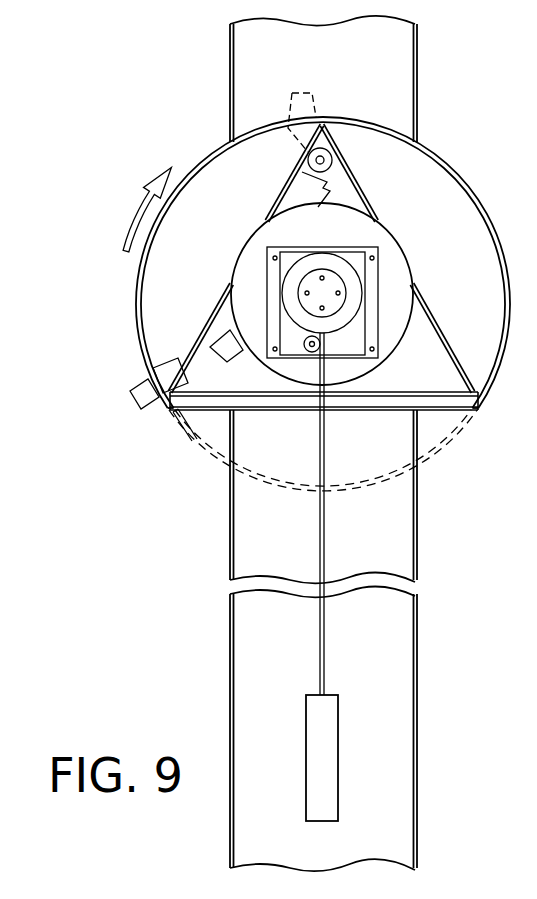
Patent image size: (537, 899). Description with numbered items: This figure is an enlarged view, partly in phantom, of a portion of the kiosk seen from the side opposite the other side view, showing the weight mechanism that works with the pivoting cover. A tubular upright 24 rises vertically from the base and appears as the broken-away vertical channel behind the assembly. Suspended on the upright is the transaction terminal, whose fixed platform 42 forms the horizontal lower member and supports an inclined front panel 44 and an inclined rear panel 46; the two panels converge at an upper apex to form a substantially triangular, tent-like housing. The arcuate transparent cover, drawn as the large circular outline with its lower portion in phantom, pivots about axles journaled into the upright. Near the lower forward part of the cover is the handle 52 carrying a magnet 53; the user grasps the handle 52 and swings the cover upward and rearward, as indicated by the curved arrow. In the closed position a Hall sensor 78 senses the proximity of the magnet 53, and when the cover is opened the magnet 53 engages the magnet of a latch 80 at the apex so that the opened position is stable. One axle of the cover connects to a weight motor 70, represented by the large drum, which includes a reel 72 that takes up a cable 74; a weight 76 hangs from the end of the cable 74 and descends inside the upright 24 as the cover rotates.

The tubular upright 24 is at (418, 517).
The fixed platform 42 is at (357, 398).
The inclined front panel 44 is at (210, 323).
The inclined rear panel 46 is at (362, 178).
The handle 52 is at (133, 400).
The magnet 53 is at (168, 367).
The weight motor 70 is at (408, 352).
The reel 72 is at (352, 280).
The cable 74 is at (325, 653).
The weight 76 is at (328, 742).
The Hall sensor 78 is at (120, 345).
The latch 80 is at (332, 152).